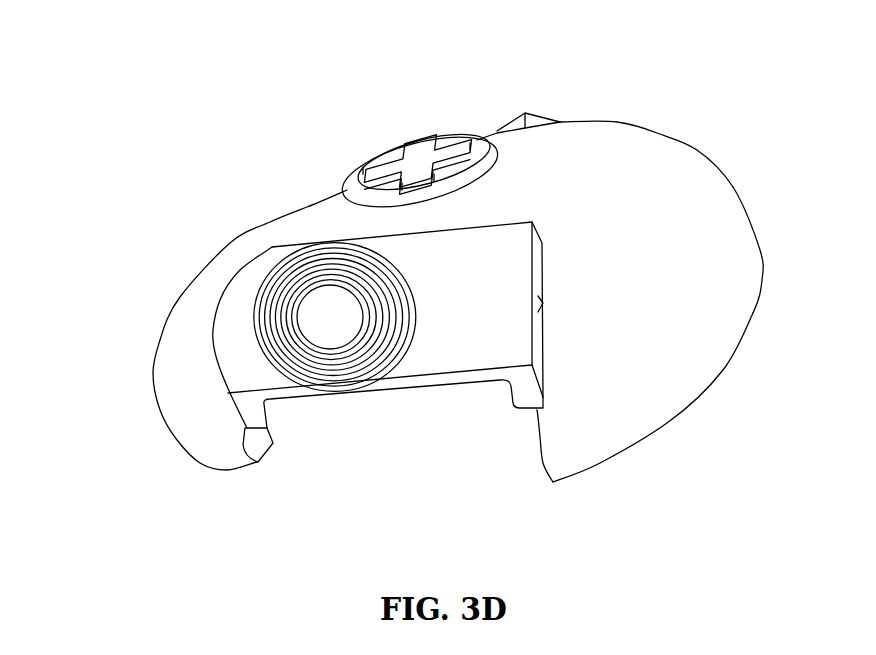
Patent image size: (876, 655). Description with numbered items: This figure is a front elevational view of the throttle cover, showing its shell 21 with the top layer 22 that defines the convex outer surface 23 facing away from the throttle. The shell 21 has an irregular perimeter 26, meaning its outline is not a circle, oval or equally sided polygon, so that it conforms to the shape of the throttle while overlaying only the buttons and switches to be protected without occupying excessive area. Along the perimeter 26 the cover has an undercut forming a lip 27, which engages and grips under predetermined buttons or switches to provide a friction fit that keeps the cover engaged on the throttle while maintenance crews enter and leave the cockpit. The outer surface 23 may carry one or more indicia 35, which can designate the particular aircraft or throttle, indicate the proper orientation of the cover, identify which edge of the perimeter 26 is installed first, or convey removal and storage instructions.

The shell 21 is at (157, 355).
The top layer 22 is at (697, 153).
The convex outer surface 23 is at (737, 190).
The irregular perimeter 26 is at (722, 368).
The lip 27 is at (247, 443).
The indicia 35 is at (363, 370).